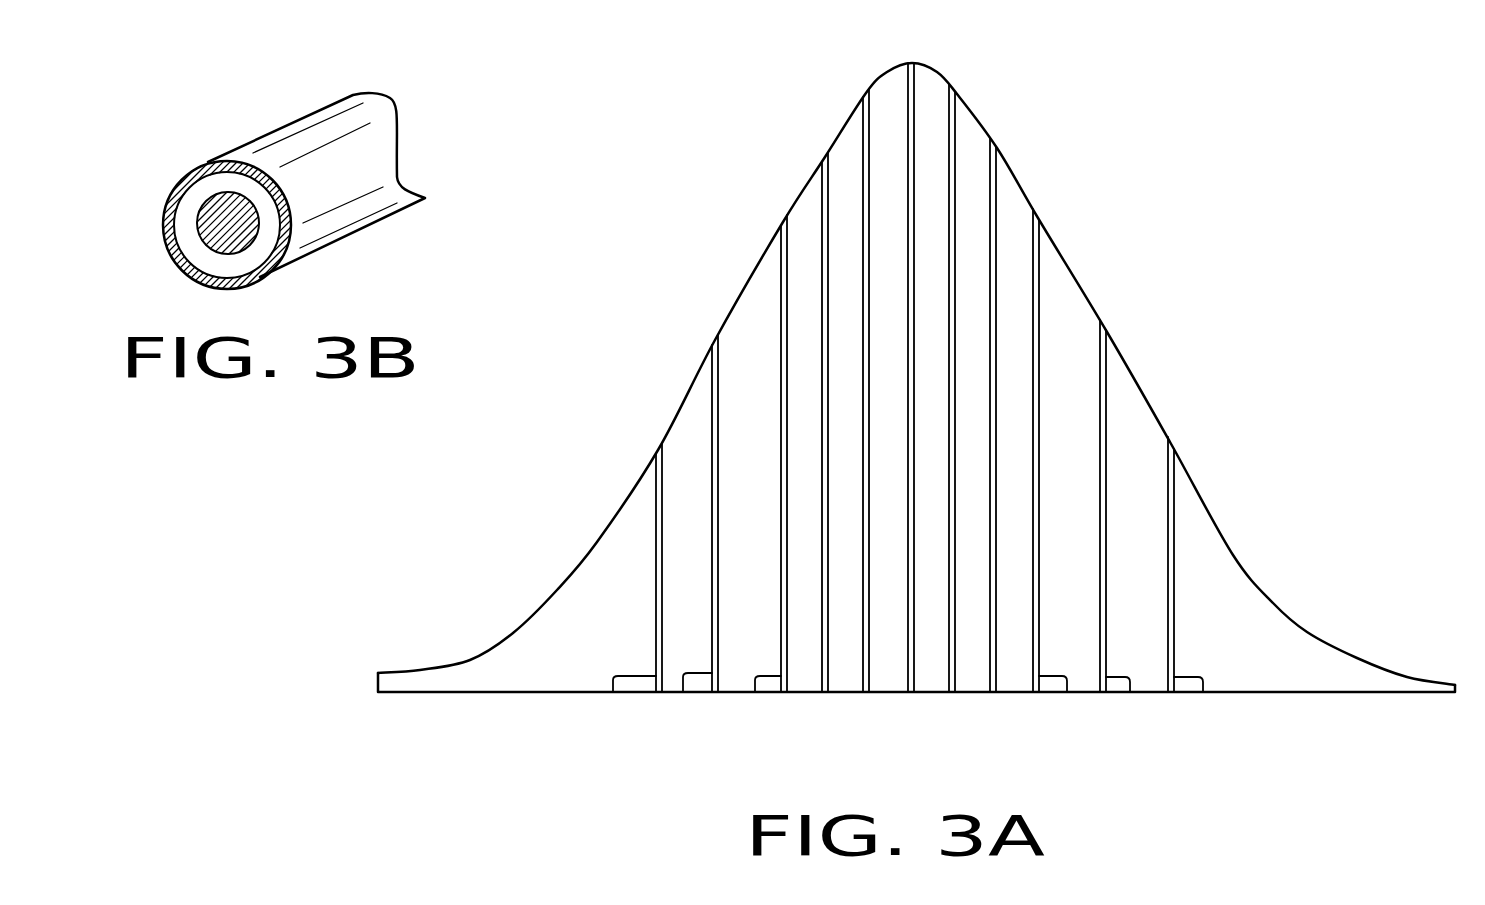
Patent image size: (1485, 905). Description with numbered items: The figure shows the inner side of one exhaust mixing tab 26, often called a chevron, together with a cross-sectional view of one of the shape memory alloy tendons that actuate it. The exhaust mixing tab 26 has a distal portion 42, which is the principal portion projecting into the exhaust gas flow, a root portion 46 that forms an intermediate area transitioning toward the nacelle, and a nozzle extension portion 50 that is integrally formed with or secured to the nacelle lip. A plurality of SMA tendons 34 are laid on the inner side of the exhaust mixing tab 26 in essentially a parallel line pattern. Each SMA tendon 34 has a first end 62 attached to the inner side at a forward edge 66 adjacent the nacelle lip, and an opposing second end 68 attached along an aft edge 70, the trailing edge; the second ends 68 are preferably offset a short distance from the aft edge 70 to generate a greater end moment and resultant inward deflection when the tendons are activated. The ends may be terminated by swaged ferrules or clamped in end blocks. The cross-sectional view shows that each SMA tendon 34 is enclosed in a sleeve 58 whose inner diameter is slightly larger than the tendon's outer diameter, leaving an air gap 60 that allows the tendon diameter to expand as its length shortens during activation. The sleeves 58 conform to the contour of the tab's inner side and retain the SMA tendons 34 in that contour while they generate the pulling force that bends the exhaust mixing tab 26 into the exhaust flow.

In FIG. 3A, the exhaust mixing tab 26 is at (1133, 228).
In FIG. 3B, the SMA tendon 34 is at (243, 240).
In FIG. 3A, the SMA tendon 34 is at (866, 200).
In FIG. 3A, the distal portion 42 is at (847, 175).
In FIG. 3A, the root portion 46 is at (1077, 455).
In FIG. 3A, the nozzle extension portion 50 is at (1285, 660).
In FIG. 3B, the sleeve 58 is at (322, 138).
In FIG. 3B, the air gap 60 is at (207, 187).
In FIG. 3A, the first end 62 is at (612, 694).
In FIG. 3A, the forward edge 66 is at (1230, 693).
In FIG. 3A, the second end 68 is at (782, 238).
In FIG. 3A, the aft edge 70 is at (983, 130).